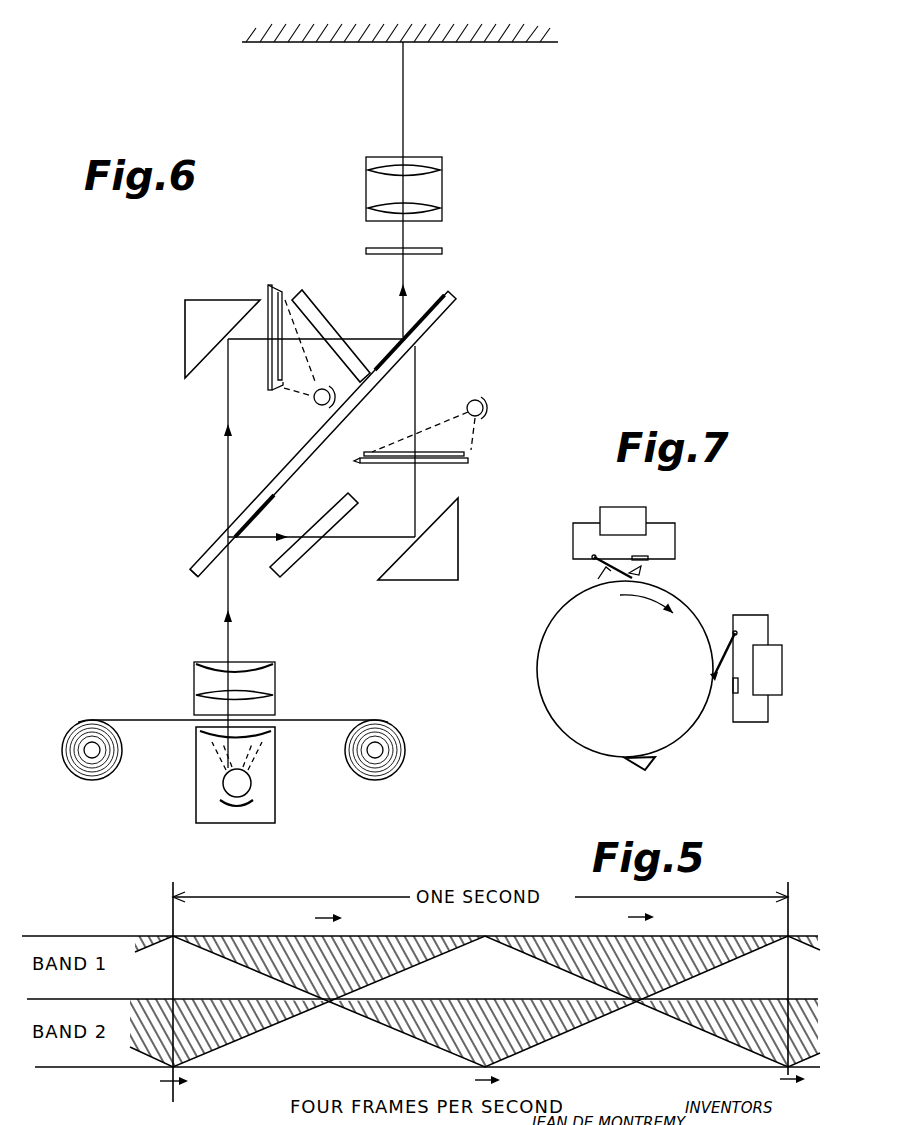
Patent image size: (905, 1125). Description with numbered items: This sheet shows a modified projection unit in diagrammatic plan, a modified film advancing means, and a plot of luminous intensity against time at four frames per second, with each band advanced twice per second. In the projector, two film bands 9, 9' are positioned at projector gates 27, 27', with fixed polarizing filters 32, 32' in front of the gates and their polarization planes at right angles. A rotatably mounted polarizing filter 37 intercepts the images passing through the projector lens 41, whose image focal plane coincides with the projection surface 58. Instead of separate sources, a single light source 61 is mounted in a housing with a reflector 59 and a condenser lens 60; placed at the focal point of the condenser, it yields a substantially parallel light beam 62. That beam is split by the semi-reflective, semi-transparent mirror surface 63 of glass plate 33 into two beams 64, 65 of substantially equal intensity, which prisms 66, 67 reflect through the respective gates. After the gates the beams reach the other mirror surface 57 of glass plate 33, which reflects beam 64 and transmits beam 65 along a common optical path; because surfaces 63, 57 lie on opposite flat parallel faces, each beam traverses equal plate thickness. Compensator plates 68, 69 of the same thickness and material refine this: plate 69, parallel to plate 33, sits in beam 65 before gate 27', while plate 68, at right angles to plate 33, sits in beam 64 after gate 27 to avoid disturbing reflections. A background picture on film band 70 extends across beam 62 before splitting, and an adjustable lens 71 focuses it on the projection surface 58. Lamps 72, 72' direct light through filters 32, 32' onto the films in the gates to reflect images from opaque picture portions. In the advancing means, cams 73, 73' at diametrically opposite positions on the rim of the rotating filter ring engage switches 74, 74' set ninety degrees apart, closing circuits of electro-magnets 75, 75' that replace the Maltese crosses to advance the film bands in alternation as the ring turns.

In FIG. 6, the projection surface 58 is at (505, 42).
In FIG. 6, the projector lens 41 is at (442, 185).
In FIG. 6, the rotatably mounted polarizing filter 37 is at (440, 246).
In FIG. 7, the rotatably mounted polarizing filter 37 is at (540, 668).
In FIG. 6, the prism 66 is at (232, 300).
In FIG. 6, the fixed polarizing filter 32 is at (288, 288).
In FIG. 6, the film band 9 is at (266, 357).
In FIG. 6, the projector gate 27 is at (283, 388).
In FIG. 6, the lamp 72 is at (336, 376).
In FIG. 6, the compensator plate 68 is at (316, 312).
In FIG. 6, the semi-reflective, semi-transparent mirror surface 57 is at (440, 296).
In FIG. 6, the glass plate 33 is at (282, 473).
In FIG. 6, the semi-reflective, semi-transparent mirror surface 63 is at (207, 573).
In FIG. 6, the light beam 64 is at (226, 458).
In FIG. 6, the light beam 65 is at (274, 538).
In FIG. 6, the compensator plate 69 is at (305, 553).
In FIG. 6, the prism 67 is at (460, 540).
In FIG. 6, the lamp 72′ is at (485, 403).
In FIG. 6, the fixed polarizing filter 32′ is at (388, 452).
In FIG. 6, the film band 9′ is at (440, 463).
In FIG. 6, the projector gate 27′ is at (358, 462).
In FIG. 6, the light beam 62 is at (230, 642).
In FIG. 6, the lens 71 is at (268, 680).
In FIG. 6, the film band 70 is at (322, 719).
In FIG. 6, the condenser lens 60 is at (266, 738).
In FIG. 6, the light source 61 is at (251, 783).
In FIG. 6, the reflector 59 is at (250, 804).
In FIG. 7, the electro-magnet 75 is at (640, 507).
In FIG. 7, the cam 73 is at (597, 571).
In FIG. 7, the switch 74 is at (645, 570).
In FIG. 7, the electro-magnet 75′ is at (780, 682).
In FIG. 7, the switch 74′ is at (714, 680).
In FIG. 7, the cam 73′ is at (658, 766).